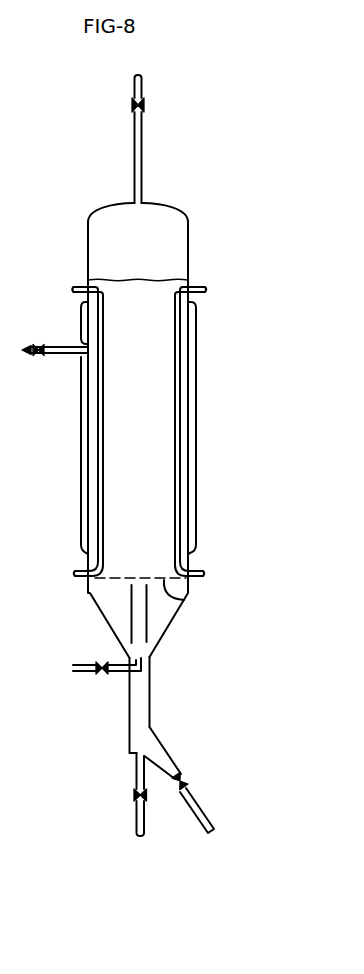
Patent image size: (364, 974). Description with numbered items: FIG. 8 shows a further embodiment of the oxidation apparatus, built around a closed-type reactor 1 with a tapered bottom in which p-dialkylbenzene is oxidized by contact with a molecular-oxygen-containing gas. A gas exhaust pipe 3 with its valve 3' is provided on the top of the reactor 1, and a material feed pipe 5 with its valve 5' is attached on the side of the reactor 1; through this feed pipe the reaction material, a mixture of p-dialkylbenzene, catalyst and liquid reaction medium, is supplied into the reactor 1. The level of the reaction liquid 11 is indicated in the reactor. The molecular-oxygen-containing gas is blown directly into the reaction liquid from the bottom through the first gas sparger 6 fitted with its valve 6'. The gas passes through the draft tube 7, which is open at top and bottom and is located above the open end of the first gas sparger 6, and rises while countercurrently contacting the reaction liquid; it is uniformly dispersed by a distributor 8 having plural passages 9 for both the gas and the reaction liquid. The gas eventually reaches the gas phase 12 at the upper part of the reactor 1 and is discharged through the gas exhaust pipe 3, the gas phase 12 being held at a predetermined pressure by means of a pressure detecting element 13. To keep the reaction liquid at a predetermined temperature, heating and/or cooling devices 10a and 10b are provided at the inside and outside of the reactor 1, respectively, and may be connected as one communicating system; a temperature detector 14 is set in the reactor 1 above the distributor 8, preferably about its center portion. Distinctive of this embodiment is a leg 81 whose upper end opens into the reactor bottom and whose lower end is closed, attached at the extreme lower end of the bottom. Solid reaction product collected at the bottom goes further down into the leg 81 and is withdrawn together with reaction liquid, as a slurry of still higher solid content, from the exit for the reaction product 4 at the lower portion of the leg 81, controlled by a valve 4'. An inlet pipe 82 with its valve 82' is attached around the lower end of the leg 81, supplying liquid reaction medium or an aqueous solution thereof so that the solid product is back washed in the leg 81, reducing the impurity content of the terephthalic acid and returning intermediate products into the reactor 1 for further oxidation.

The reactor 1 is at (188, 240).
The gas exhaust pipe 3 is at (147, 139).
The valve 3' is at (149, 102).
The exit for the reaction product 4 is at (133, 794).
The valve 4' is at (133, 799).
The material feed pipe 5 is at (55, 340).
The valve 5' is at (37, 341).
The first gas sparger 6 is at (107, 680).
The valve 6' is at (112, 682).
The draft tube 7 is at (147, 622).
The distributor 8 is at (153, 579).
The passages 9 is at (184, 600).
The heating and/or cooling device 10a is at (104, 384).
The heating and/or cooling device 10b is at (193, 340).
The level of the reaction liquid 11 is at (165, 280).
The gas phase 12 is at (105, 230).
The pressure detecting element 13 is at (165, 220).
The temperature detector 14 is at (137, 440).
The leg 81 is at (151, 692).
The inlet pipe 82 is at (180, 780).
The valve 82' is at (196, 776).